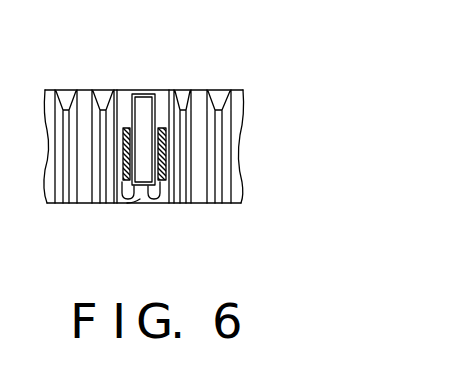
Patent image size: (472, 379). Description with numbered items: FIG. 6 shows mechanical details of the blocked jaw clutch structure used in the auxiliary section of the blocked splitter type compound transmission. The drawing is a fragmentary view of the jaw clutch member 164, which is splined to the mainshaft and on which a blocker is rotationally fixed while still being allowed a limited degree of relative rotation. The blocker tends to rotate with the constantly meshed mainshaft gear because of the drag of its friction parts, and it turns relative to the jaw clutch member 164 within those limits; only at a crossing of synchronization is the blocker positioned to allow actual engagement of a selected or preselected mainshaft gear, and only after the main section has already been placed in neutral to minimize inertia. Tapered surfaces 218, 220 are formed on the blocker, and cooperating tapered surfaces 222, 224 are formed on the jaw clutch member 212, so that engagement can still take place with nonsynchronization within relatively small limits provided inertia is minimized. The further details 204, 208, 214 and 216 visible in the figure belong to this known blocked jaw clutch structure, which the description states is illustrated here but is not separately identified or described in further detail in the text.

The jaw clutch member 164 is at (258, 95).
The connector body 204 is at (60, 213).
The contact pins 208 is at (180, 97).
The jaw clutch member 212 is at (142, 203).
The right insulating member 214 is at (162, 128).
The left insulating member 216 is at (124, 128).
The tapered surface 218 is at (158, 193).
The tapered surface 220 is at (126, 184).
The tapered surface 222 is at (168, 186).
The tapered surface 224 is at (127, 203).